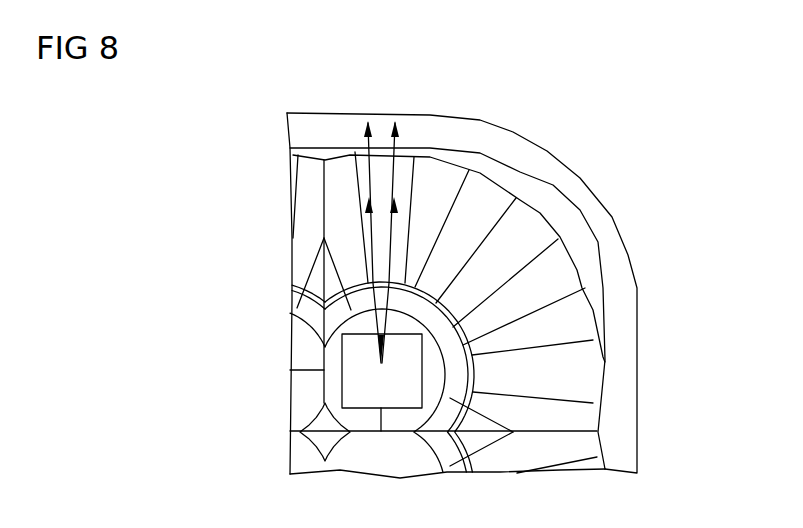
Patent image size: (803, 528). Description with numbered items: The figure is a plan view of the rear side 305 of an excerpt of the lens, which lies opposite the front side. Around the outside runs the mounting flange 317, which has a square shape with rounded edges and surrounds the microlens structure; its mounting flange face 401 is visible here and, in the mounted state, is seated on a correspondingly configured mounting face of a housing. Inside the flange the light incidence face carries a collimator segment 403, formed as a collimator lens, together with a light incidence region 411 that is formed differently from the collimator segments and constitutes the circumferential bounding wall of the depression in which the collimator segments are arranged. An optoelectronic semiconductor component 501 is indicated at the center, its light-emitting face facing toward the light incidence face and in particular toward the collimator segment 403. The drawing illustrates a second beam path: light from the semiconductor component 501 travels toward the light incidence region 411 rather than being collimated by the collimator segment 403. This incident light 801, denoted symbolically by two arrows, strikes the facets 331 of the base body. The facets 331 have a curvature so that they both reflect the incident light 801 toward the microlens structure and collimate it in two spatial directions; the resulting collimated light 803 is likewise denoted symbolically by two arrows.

The rear side 305 is at (586, 140).
The mounting flange 317 is at (316, 119).
The facets 331 is at (473, 197).
The mounting flange face 401 is at (302, 132).
The collimator segment 403 is at (430, 353).
The light incidence region 411 is at (338, 300).
The optoelectronic semiconductor component 501 is at (407, 383).
The incident light 801 is at (397, 247).
The collimated light 803 is at (395, 118).